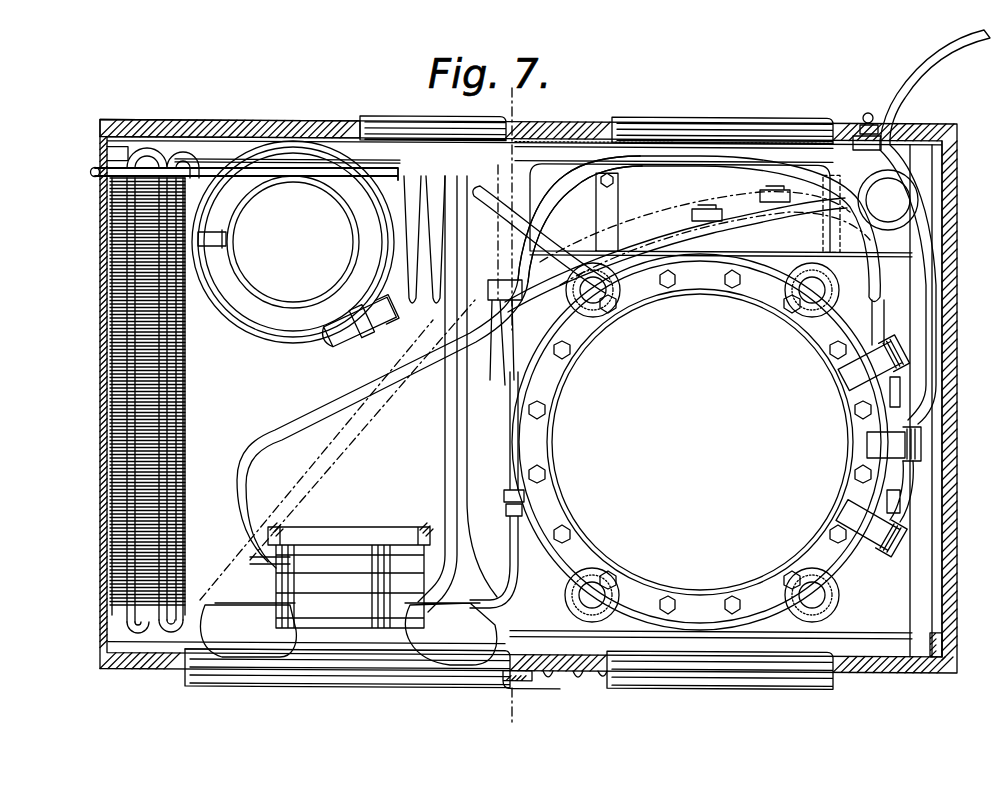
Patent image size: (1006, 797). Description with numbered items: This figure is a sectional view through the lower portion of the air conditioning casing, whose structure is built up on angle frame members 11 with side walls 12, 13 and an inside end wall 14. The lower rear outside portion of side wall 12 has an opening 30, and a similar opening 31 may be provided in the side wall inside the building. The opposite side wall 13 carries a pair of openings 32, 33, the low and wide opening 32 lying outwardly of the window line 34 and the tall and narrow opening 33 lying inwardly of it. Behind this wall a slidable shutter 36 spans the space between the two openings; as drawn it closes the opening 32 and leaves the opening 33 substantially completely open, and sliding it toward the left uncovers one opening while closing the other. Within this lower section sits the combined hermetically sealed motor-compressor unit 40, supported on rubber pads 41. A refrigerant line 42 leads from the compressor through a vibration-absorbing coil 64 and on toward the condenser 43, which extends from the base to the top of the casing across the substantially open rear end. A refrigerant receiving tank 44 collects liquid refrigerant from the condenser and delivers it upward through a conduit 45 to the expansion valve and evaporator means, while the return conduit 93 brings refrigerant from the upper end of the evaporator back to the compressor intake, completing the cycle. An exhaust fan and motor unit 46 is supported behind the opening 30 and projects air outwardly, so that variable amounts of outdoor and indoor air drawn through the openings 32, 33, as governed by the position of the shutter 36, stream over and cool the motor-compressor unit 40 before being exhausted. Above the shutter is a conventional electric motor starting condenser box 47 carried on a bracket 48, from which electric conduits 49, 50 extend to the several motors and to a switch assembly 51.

The angle frame members 11 is at (100, 140).
The side wall 12 is at (520, 674).
The side wall 13 is at (283, 122).
The inside end wall 14 is at (942, 432).
The opening 30 is at (390, 680).
The opening 31 is at (805, 680).
The opening 32 is at (754, 132).
The opening 33 is at (392, 128).
The window line 34 is at (516, 100).
The slidable shutter 36 is at (650, 140).
The motor-compressor unit 40 is at (800, 530).
The rubber pads 41 is at (620, 290).
The refrigerant line 42 is at (93, 176).
The condenser 43 is at (115, 300).
The refrigerant receiving tank 44 is at (258, 275).
The conduit 45 is at (445, 418).
The exhaust fan and motor unit 46 is at (315, 612).
The electric motor starting condenser box 47 is at (682, 180).
The bracket 48 is at (590, 163).
The electric conduit 49 is at (700, 212).
The electric conduit 50 is at (862, 228).
The switch assembly 51 is at (868, 120).
The coil 64 is at (410, 298).
The conduit 93 is at (480, 200).